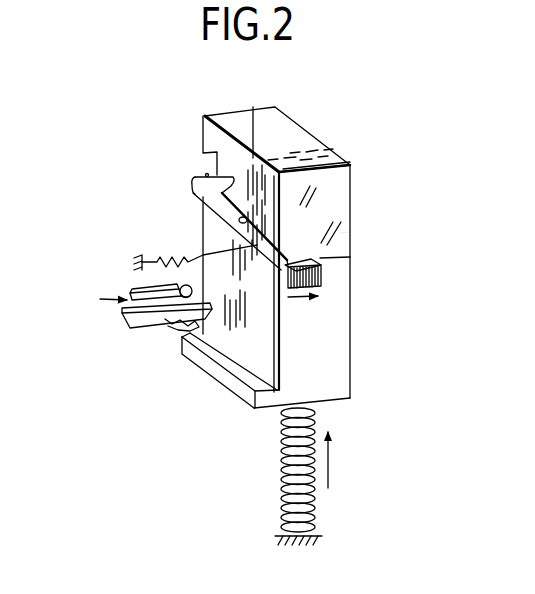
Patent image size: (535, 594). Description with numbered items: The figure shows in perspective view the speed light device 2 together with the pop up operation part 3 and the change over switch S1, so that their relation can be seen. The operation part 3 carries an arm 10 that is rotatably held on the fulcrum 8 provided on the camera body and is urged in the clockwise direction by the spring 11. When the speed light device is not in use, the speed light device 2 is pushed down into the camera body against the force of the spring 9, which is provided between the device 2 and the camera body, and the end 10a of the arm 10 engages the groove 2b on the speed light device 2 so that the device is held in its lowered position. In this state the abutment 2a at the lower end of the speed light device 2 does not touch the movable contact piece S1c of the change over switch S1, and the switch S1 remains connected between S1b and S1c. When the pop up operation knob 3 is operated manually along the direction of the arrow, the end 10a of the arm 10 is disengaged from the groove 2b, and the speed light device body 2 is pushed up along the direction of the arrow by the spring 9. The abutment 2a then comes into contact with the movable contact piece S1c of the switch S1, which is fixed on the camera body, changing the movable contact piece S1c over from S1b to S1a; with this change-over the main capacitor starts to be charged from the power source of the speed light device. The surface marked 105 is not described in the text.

The speed light device 2 is at (298, 133).
The abutment 2a is at (238, 393).
The groove 2b is at (229, 193).
The pop up operation part 3 is at (322, 278).
The fulcrum 8 is at (246, 216).
The spring 9 is at (283, 465).
The arm 10 is at (194, 185).
The end of the arm 10a is at (222, 176).
The spring 11 is at (172, 255).
The surface of block 105 is at (343, 233).
The change over switch S1 is at (96, 305).
The contact of the change over switch S1a is at (180, 298).
The contact of the change over switch S1b is at (192, 320).
The movable contact piece S1c is at (213, 303).